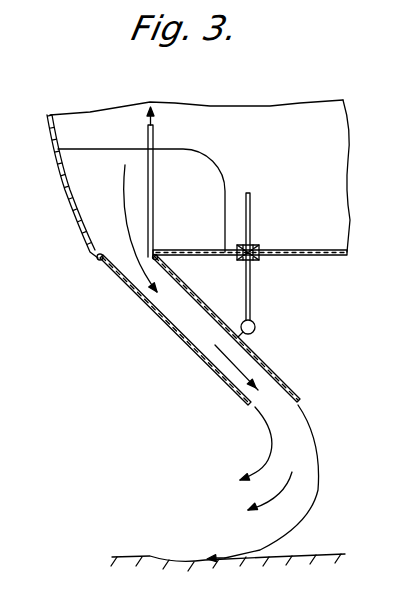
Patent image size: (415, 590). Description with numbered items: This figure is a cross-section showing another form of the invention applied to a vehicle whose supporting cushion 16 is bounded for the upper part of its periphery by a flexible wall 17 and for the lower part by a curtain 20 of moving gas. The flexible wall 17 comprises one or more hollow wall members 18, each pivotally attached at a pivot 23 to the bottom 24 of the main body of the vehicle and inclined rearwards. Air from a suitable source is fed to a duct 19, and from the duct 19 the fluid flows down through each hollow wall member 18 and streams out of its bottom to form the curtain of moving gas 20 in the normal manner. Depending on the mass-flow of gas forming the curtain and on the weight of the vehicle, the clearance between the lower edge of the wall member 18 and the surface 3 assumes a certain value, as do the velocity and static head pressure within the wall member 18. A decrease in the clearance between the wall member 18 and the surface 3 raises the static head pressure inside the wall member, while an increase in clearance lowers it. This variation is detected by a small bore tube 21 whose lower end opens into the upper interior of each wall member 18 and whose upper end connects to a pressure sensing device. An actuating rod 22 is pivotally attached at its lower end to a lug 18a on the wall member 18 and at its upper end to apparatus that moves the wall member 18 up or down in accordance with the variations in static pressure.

The surface 3 is at (303, 557).
The cushion 16 is at (352, 380).
The flexible wall 17 is at (163, 333).
The hollow wall member 18 is at (193, 350).
The lug 18a is at (250, 332).
The duct 19 is at (88, 188).
The curtain of moving gas 20 is at (307, 462).
The small bore tube 21 is at (153, 202).
The actuating rod 22 is at (252, 290).
The pivotal attachment 23 is at (203, 243).
The bottom of the main body of the vehicle 24 is at (345, 257).